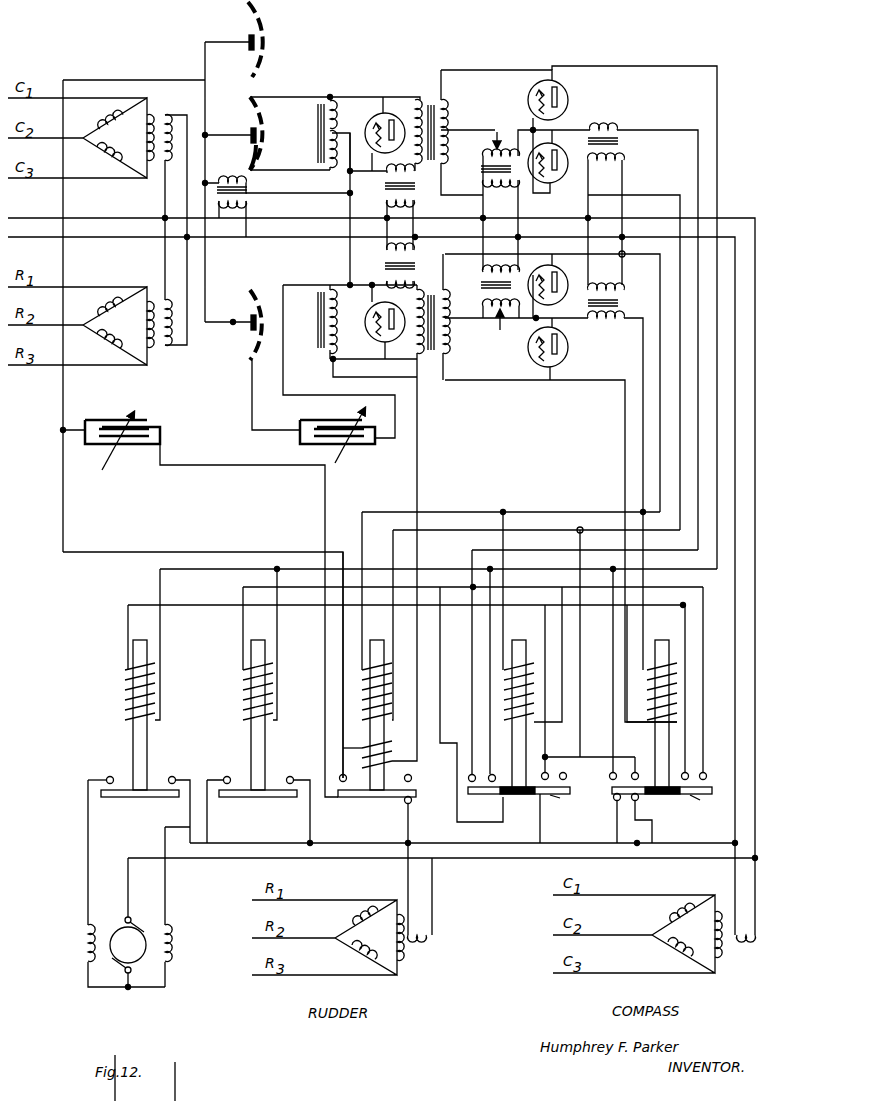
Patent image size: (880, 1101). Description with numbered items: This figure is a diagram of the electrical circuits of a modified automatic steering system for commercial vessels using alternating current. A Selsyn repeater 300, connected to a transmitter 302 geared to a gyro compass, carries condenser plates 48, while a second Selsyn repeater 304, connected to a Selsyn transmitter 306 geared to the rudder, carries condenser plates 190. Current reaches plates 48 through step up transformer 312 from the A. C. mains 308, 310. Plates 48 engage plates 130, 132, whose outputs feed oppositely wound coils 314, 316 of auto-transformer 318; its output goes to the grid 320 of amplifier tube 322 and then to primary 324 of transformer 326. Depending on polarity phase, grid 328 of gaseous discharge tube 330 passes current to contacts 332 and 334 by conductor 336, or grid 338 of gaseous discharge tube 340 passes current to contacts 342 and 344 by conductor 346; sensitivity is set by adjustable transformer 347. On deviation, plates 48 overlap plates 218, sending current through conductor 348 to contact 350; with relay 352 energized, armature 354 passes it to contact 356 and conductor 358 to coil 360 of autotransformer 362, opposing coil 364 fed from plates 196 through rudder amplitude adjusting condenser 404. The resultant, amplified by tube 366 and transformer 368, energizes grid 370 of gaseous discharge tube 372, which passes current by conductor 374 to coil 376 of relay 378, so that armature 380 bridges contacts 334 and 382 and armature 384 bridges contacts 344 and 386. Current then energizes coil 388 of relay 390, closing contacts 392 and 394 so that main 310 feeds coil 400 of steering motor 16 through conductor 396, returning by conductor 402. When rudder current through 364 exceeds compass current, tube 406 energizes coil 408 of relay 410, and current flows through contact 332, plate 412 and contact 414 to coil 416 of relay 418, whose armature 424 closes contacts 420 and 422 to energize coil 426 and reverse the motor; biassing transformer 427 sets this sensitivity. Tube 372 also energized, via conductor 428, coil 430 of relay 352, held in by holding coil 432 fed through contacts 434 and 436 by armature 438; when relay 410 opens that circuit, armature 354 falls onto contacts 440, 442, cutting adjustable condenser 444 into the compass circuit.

The steering motor 16 is at (138, 953).
The condenser plates 48 is at (248, 134).
The condenser plates 130 is at (250, 105).
The condenser plates 132 is at (250, 153).
The condenser plates 190 is at (250, 329).
The condenser plates 196 is at (248, 364).
The condenser plates 218 is at (268, 70).
The Selsyn repeater 300 is at (153, 112).
The transmitter 302 is at (722, 947).
The Selsyn repeater 304 is at (165, 355).
The Selsyn transmitter 306 is at (420, 952).
The A. C. main 308 is at (753, 769).
The A. C. main 310 is at (738, 830).
The step up transformer 312 is at (250, 200).
The coil 314 is at (316, 130).
The coil 316 is at (316, 156).
The auto-transformer 318 is at (333, 94).
The grid 320 is at (365, 132).
The amplifier tube 322 is at (370, 94).
The primary 324 is at (405, 97).
The transformer 326 is at (452, 83).
The grid 328 is at (540, 190).
The gaseous discharge tube 330 is at (590, 166).
The contact 332 is at (690, 760).
The contact 334 is at (566, 805).
The conductor 336 is at (690, 605).
The grid 338 is at (542, 80).
The gaseous discharge tube 340 is at (570, 100).
The contact 342 is at (612, 776).
The contact 344 is at (485, 785).
The conductor 346 is at (740, 532).
The adjustable transformer 347 is at (497, 143).
The conductor 348 is at (60, 526).
The contact 350 is at (327, 775).
The relay 352 is at (375, 640).
The armature 354 is at (375, 799).
The contact 356 is at (418, 728).
The conductor 358 is at (420, 445).
The coil 360 is at (330, 362).
The autotransformer 362 is at (320, 315).
The coil 364 is at (334, 280).
The tube 366 is at (368, 338).
The transformer 368 is at (445, 370).
The grid 370 is at (545, 252).
The gaseous discharge tube 372 is at (570, 282).
The conductor 374 is at (660, 459).
The coil 376 is at (540, 684).
The relay 378 is at (530, 644).
The armature 380 is at (542, 800).
The contact 382 is at (555, 760).
The armature 384 is at (503, 798).
The contact 386 is at (458, 750).
The coil 388 is at (128, 695).
The relay 390 is at (130, 650).
The contact 392 is at (107, 776).
The contact 394 is at (173, 775).
The conductor 396 is at (80, 837).
The coil 400 is at (80, 944).
The conductor 402 is at (130, 830).
The rudder amplitude adjusting condenser 404 is at (360, 452).
The gaseous discharge tube 406 is at (570, 352).
The coil 408 is at (670, 692).
The relay 410 is at (665, 650).
The plate 412 is at (708, 806).
The contact 414 is at (706, 774).
The coil 416 is at (244, 695).
The relay 418 is at (247, 650).
The contact 420 is at (227, 777).
The contact 422 is at (290, 785).
The armature 424 is at (245, 797).
The coil 426 is at (170, 944).
The biassing transformer 427 is at (498, 330).
The conductor 428 is at (447, 512).
The coil 430 is at (395, 684).
The holding coil 432 is at (342, 750).
The contact 434 is at (645, 798).
The contact 436 is at (615, 807).
The armature 438 is at (640, 820).
The contact 440 is at (343, 785).
The contact 442 is at (405, 820).
The adjustable condenser 444 is at (128, 455).